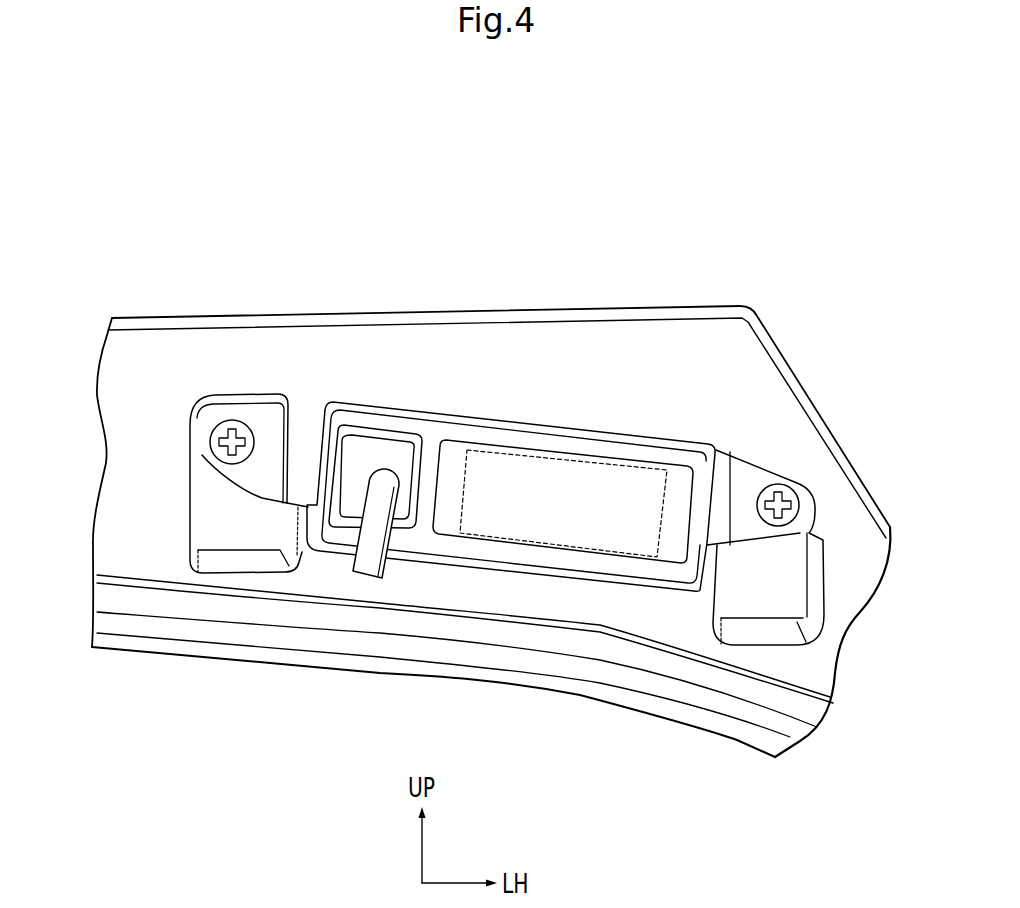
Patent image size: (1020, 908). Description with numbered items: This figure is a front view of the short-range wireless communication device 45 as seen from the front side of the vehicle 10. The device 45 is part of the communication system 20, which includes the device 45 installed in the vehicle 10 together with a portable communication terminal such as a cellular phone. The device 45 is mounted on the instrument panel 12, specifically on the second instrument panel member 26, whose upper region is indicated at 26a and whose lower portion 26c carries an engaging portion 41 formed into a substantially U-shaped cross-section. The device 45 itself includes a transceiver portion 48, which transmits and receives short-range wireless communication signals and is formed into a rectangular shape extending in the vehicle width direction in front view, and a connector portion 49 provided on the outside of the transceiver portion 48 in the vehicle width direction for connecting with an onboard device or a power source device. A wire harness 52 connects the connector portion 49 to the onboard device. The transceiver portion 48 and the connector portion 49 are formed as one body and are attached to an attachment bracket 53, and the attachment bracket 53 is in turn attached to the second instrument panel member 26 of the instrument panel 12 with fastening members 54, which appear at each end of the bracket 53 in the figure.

The vehicle 10 is at (321, 184).
The instrument panel 12 is at (160, 304).
The communication system 20 is at (320, 359).
The second instrument panel member 26 is at (124, 376).
The upper portion of back board 26a is at (705, 340).
The lower portion 26c is at (517, 600).
The engaging portion 41 is at (603, 677).
The short-range wireless communication device 45 is at (655, 243).
The transceiver portion 48 is at (588, 485).
The connector portion 49 is at (365, 453).
The wire harness 52 is at (378, 538).
The attachment bracket 53 is at (263, 421).
The fastening members 54 is at (222, 445).